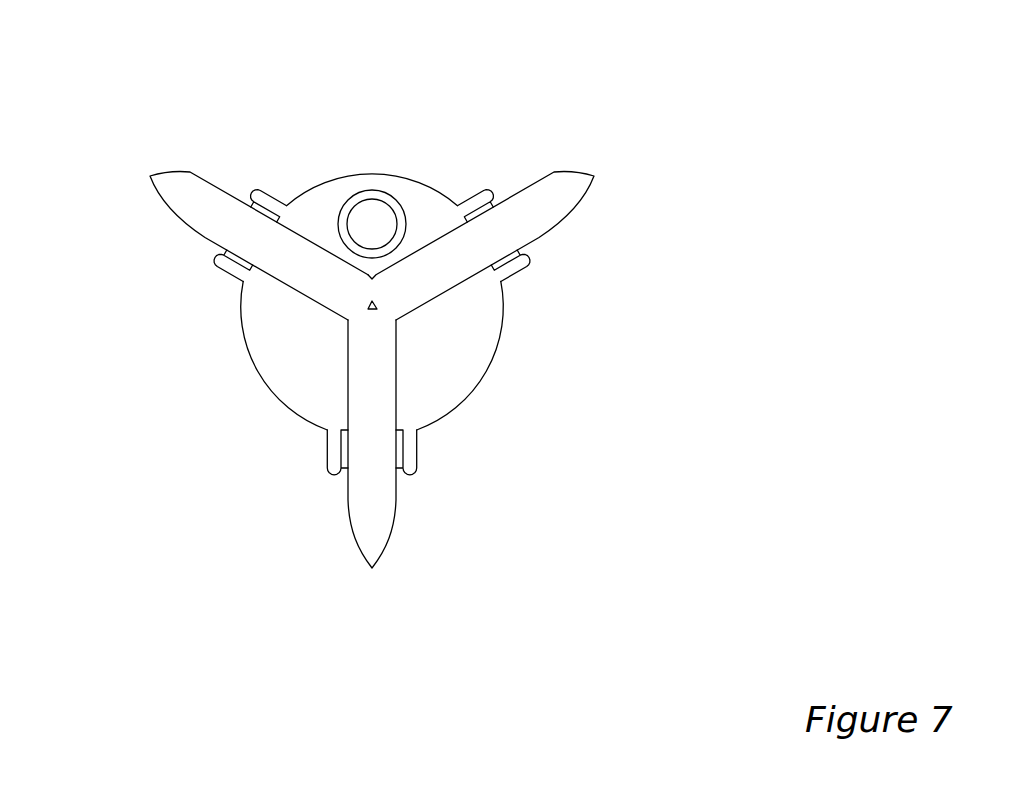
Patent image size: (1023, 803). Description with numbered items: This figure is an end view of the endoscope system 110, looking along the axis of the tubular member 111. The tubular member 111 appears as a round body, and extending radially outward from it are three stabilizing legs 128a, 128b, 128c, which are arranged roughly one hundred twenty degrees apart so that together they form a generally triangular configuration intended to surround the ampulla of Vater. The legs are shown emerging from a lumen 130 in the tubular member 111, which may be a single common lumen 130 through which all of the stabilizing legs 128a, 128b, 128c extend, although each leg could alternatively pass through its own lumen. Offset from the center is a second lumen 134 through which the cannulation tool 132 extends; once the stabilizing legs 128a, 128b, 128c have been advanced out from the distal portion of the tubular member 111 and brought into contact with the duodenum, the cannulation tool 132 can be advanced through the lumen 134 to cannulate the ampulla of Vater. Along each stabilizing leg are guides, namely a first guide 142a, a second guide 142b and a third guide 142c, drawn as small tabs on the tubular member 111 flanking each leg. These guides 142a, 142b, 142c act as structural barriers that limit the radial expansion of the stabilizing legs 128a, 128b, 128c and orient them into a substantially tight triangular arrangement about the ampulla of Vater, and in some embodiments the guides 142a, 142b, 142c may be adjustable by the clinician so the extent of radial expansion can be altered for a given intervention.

The endoscope system 110 is at (520, 86).
The tubular member 111 is at (260, 372).
The stabilizing leg 128a is at (202, 207).
The stabilizing leg 128b is at (372, 505).
The stabilizing leg 128c is at (555, 203).
The lumen 130 is at (398, 323).
The cannulation tool 132 is at (367, 217).
The lumen 134 is at (386, 199).
The first guide 142a is at (251, 192).
The second guide 142b is at (410, 464).
The third guide 142c is at (523, 268).